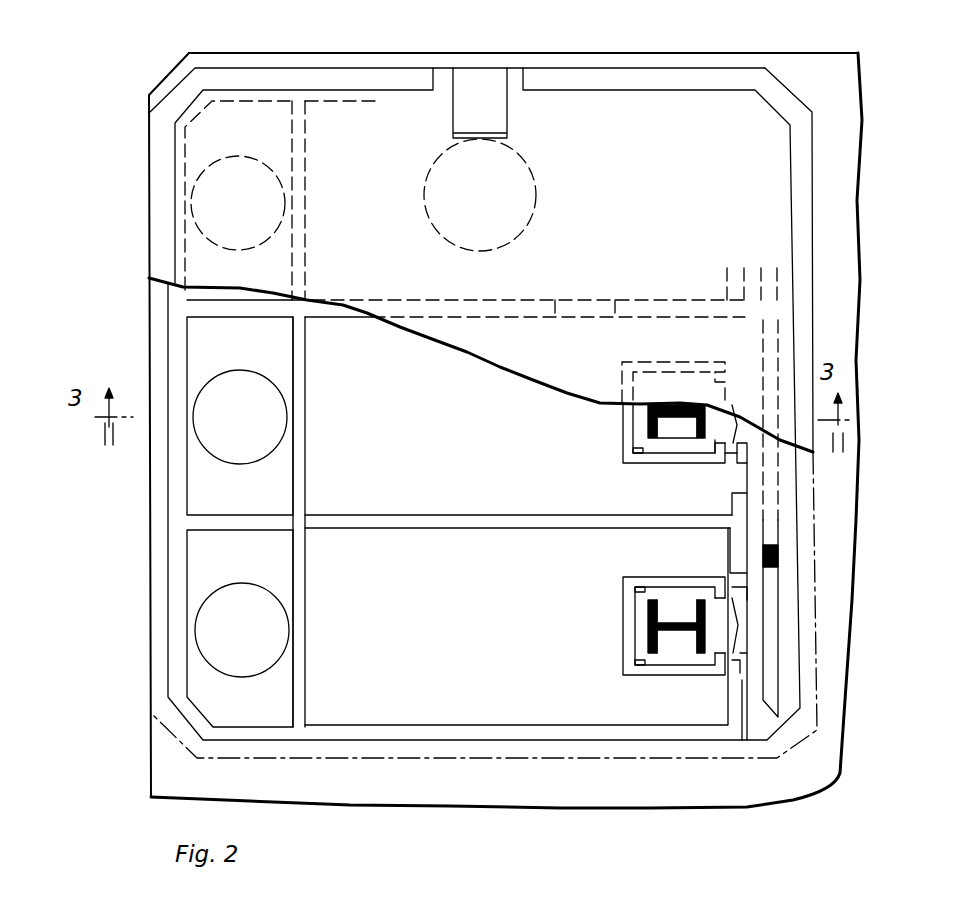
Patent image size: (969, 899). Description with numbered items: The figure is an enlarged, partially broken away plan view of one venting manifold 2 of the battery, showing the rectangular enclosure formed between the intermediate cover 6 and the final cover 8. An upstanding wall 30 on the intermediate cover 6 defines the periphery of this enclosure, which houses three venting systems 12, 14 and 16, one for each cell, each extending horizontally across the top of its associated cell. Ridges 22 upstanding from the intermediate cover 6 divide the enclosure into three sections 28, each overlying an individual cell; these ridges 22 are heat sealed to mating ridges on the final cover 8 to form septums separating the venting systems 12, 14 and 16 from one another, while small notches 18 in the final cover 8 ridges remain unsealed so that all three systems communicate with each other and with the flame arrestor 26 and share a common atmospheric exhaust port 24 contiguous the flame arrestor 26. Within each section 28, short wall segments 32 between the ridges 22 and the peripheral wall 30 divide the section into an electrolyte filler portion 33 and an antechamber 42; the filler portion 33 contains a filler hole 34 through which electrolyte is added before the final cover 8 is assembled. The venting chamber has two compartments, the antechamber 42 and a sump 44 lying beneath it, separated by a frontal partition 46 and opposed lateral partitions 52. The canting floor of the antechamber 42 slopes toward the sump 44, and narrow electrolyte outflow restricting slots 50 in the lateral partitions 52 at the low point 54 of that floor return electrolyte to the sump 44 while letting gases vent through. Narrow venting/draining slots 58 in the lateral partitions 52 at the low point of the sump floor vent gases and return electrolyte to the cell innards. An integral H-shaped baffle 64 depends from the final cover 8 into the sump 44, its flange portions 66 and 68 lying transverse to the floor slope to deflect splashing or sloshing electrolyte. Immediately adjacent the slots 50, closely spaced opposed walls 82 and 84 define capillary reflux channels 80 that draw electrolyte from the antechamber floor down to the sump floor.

The venting manifold 2 is at (256, 48).
The intermediate cover 6 is at (832, 82).
The final cover 8 is at (202, 137).
The venting system 12 is at (188, 293).
The venting system 14 is at (189, 491).
The venting system 16 is at (191, 677).
The notches 18 is at (555, 303).
The ridges 22 is at (323, 308).
The atmospheric exhaust port 24 is at (483, 130).
The flame arrestor 26 is at (528, 185).
The sections 28 is at (473, 292).
The upstanding wall 30 is at (178, 600).
The short wall segments 32 is at (300, 427).
The electrolyte filler portion 33 is at (200, 297).
The filler hole 34 is at (245, 371).
The antechamber 42 is at (468, 405).
The sump 44 is at (633, 443).
The frontal partition 46 is at (623, 417).
The electrolyte outflow restricting slots 50 is at (737, 400).
The lateral partitions 52 is at (637, 362).
The low point 54 is at (703, 767).
The venting/draining slots 58 is at (633, 458).
The H-shaped baffle 64 is at (670, 405).
The flange portion 66 is at (633, 427).
The flange portion 68 is at (700, 440).
The capillary reflux channels 80 is at (722, 529).
The opposed wall 82 is at (720, 365).
The opposed wall 84 is at (740, 453).